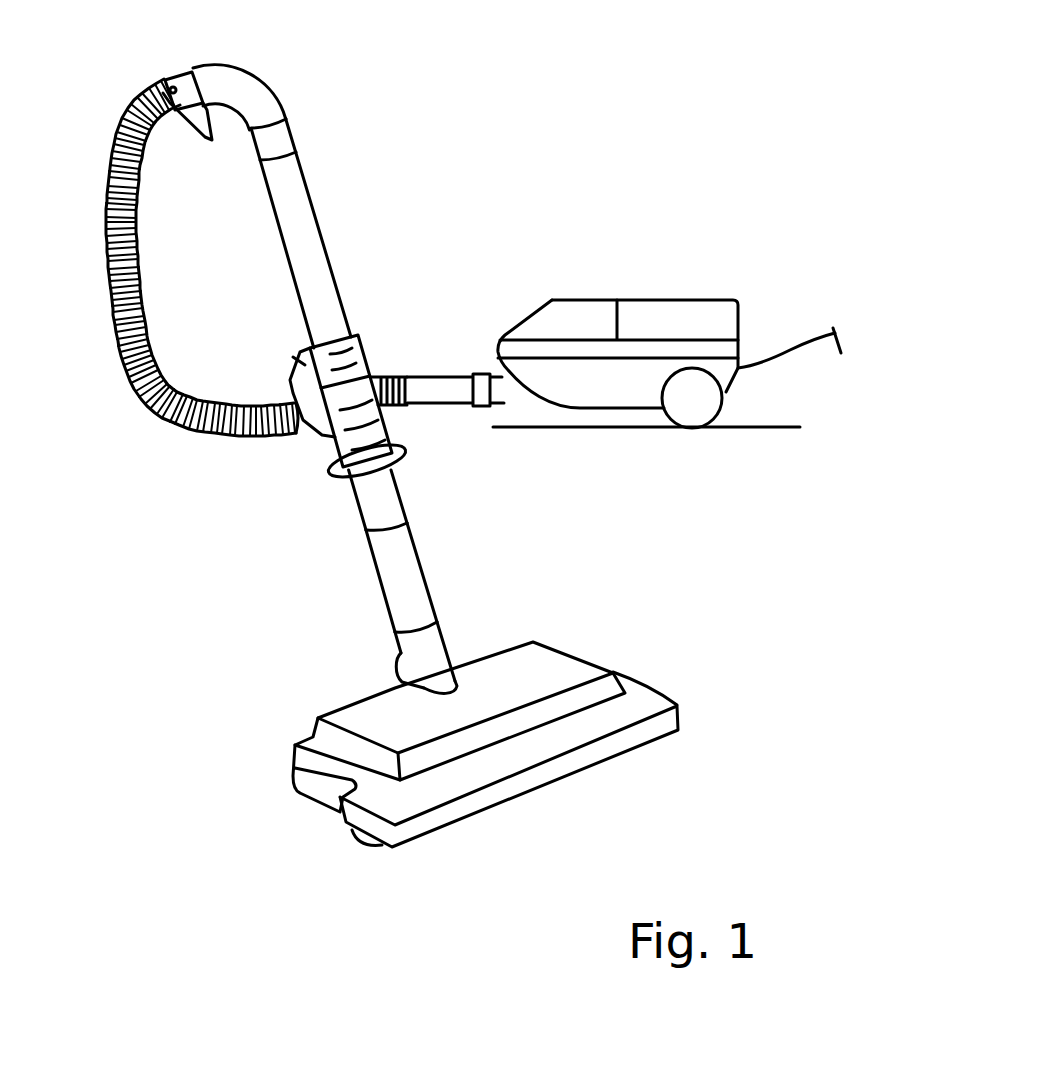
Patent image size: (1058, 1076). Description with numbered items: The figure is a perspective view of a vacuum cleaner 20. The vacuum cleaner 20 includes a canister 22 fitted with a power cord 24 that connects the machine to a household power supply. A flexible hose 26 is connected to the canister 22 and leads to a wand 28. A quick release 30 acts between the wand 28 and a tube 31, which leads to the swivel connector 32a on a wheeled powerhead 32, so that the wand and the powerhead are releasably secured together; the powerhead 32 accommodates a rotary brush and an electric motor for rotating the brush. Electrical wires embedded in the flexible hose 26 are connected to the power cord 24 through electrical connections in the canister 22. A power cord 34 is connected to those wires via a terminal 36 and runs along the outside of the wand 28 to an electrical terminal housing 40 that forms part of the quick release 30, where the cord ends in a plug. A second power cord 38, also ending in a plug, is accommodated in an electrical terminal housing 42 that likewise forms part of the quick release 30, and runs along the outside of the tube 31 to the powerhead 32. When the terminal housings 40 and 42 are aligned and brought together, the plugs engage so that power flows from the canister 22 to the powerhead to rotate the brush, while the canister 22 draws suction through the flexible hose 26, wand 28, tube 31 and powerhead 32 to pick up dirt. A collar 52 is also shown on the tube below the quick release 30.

The vacuum cleaner 20 is at (455, 424).
The canister 22 is at (586, 317).
The power cord 24 is at (815, 375).
The flexible hose 26 is at (171, 273).
The wand 28 is at (298, 206).
The quick release 30 is at (374, 350).
The tube 31 is at (457, 577).
The wheeled powerhead 32 is at (524, 705).
The swivel connector 32a is at (487, 642).
The power cord 34 is at (190, 166).
The terminal 36 is at (110, 133).
The second power cord 38 is at (337, 667).
The electrical terminal housing 40 is at (267, 378).
The electrical terminal housing 42 is at (256, 460).
The collar 52 is at (414, 484).